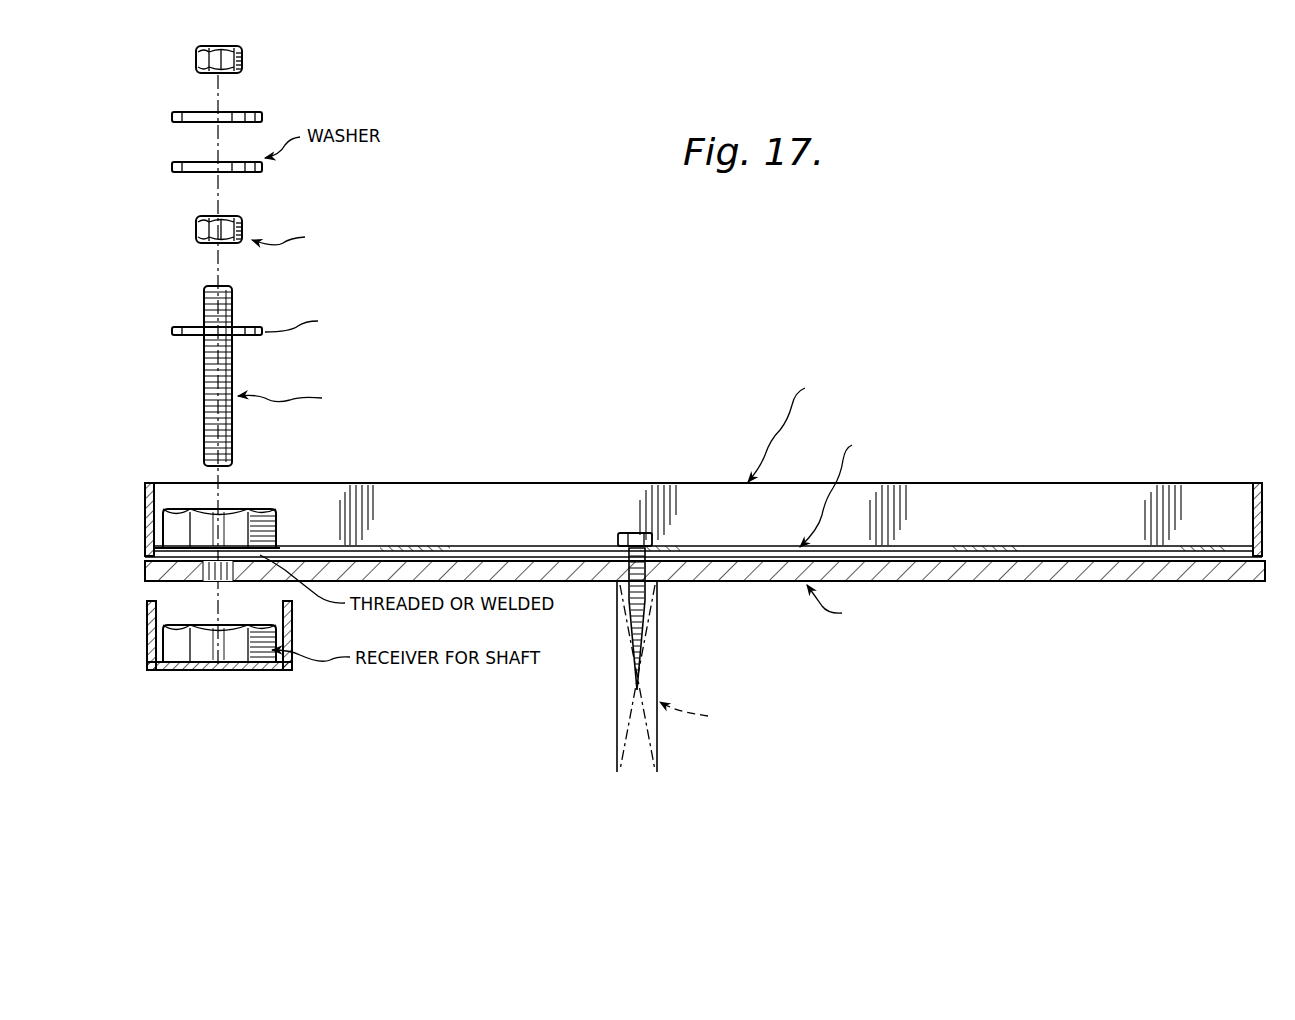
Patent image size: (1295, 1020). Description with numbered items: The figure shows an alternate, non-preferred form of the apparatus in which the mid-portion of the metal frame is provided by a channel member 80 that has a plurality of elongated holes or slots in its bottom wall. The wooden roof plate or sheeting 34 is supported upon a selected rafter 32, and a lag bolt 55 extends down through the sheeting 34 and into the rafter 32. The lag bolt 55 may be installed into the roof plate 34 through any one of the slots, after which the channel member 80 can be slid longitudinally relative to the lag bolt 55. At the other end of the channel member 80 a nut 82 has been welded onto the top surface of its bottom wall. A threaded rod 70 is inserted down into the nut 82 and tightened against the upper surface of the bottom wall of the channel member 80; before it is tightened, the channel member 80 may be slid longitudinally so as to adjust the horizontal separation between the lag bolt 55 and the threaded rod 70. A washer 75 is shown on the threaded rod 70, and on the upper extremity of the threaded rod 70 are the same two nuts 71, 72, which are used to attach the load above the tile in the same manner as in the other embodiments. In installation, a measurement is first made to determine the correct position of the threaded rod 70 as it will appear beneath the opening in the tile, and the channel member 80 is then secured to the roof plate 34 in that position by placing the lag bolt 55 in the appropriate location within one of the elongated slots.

The nut 72 is at (243, 58).
The nut 71 is at (243, 226).
The washer 75 is at (238, 337).
The threaded rod 70 is at (235, 434).
The channel member 80 is at (633, 483).
The nut 82 is at (166, 530).
The roof plate or sheeting 34 is at (1247, 582).
The rafter 32 is at (616, 676).
The lag bolt 55 is at (648, 617).